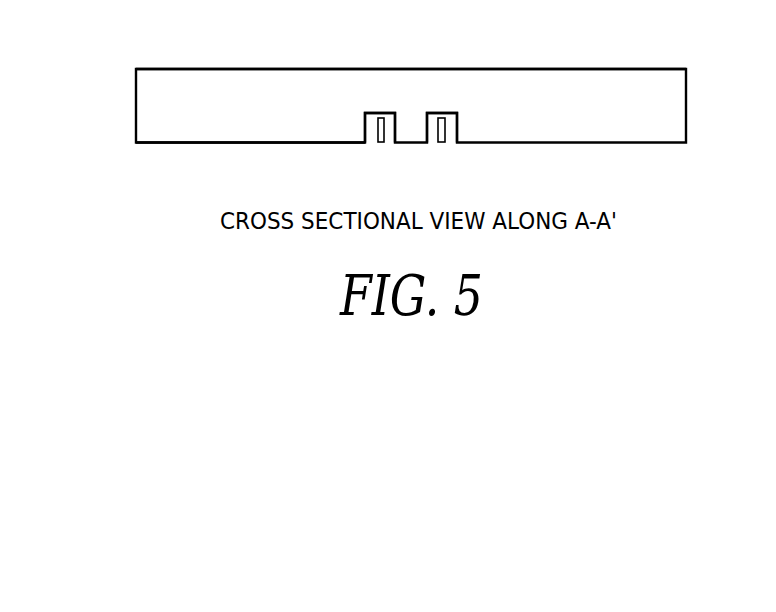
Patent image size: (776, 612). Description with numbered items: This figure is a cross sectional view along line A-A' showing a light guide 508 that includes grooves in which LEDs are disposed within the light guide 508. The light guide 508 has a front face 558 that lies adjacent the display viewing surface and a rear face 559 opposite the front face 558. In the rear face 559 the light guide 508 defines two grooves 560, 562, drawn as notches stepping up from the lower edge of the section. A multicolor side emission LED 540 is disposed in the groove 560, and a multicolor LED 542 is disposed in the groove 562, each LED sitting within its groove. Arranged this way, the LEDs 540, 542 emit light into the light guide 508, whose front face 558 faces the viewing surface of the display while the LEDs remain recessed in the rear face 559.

The light guide 508 is at (666, 69).
The front face 558 is at (180, 68).
The rear face 559 is at (182, 143).
The LED 540 is at (378, 113).
The multicolor LED 542 is at (445, 113).
The groove 560 is at (381, 142).
The groove 562 is at (443, 142).